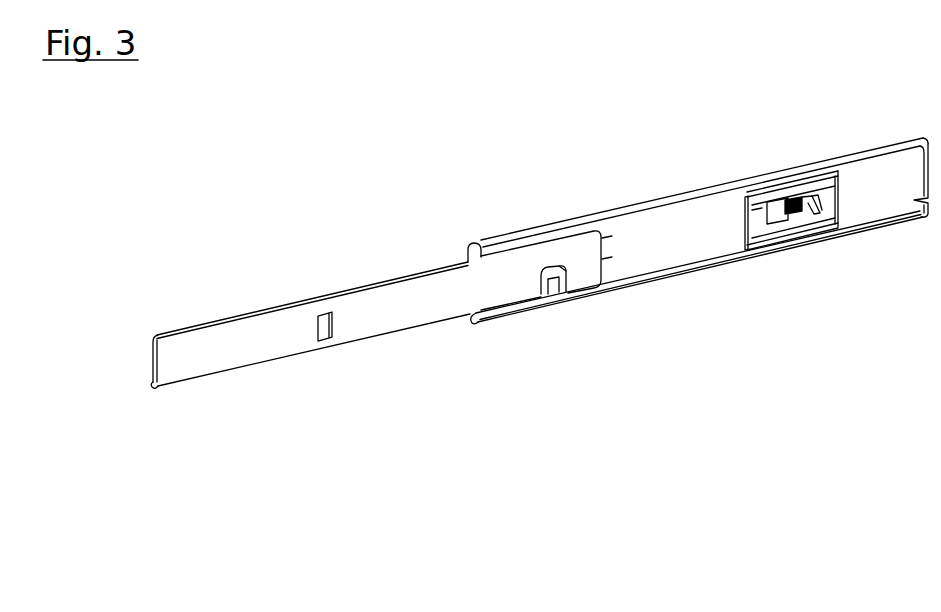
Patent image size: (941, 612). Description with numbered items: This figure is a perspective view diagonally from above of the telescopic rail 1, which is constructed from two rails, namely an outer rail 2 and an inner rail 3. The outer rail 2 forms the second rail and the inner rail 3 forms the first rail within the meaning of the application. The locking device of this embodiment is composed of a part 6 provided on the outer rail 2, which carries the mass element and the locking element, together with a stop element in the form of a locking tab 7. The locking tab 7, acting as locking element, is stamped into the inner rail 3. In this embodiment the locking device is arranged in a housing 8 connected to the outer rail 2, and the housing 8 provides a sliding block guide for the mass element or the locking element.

The telescopic rail 1 is at (568, 160).
The outer rail 2 is at (658, 245).
The inner rail 3 is at (392, 305).
The part provided on the outer rail 6 is at (800, 288).
The locking tab 7 is at (550, 283).
The housing 8 is at (797, 222).